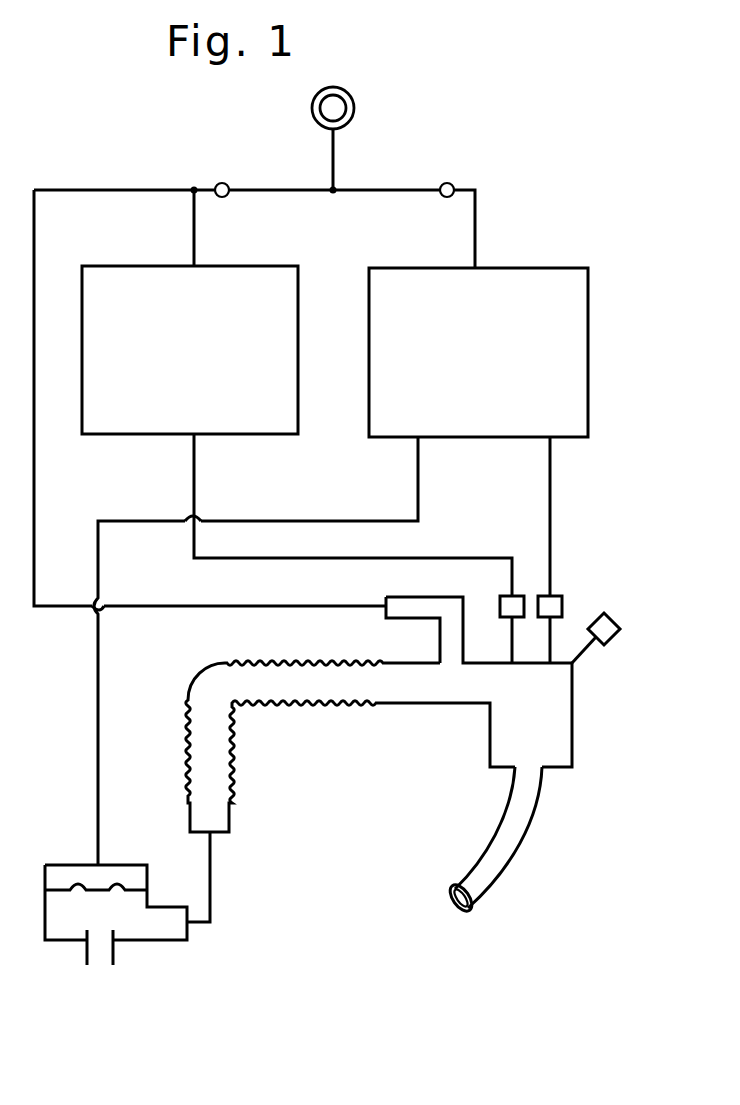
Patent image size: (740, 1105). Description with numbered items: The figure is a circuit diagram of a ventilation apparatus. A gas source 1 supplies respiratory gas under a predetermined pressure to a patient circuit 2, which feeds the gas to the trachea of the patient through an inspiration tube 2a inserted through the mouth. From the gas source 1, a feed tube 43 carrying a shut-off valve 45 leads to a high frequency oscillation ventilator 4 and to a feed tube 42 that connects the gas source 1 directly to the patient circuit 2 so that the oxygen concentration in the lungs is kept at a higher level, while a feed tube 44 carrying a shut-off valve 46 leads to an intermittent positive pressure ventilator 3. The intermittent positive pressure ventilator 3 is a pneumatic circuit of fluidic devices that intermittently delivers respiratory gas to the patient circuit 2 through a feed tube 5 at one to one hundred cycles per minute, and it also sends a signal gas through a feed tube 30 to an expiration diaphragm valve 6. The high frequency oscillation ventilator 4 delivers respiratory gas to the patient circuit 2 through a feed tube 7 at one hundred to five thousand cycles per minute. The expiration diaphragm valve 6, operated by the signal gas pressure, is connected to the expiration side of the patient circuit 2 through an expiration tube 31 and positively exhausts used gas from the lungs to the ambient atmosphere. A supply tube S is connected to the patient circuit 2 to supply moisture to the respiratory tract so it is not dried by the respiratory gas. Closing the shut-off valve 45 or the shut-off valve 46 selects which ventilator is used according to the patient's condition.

The gas source 1 is at (368, 99).
The patient circuit 2 is at (410, 705).
The inspiration tube 2a is at (522, 848).
The intermittent positive pressure ventilator 3 is at (532, 268).
The high frequency oscillation ventilator 4 is at (258, 266).
The feed tube 5 is at (562, 603).
The expiration diaphragm valve 6 is at (125, 865).
The feed tube 7 is at (524, 605).
The feed tube 30 is at (322, 521).
The expiration tube 31 is at (210, 876).
The feed tube 42 is at (34, 483).
The feed tube 43 is at (262, 190).
The feed tube 44 is at (404, 190).
The shut-off valve 45 is at (222, 183).
The shut-off valve 46 is at (447, 183).
The supply tube S is at (620, 629).